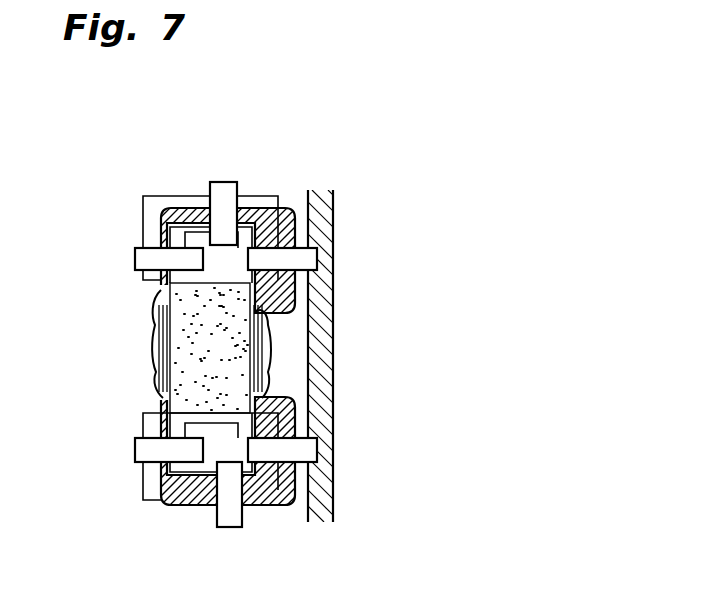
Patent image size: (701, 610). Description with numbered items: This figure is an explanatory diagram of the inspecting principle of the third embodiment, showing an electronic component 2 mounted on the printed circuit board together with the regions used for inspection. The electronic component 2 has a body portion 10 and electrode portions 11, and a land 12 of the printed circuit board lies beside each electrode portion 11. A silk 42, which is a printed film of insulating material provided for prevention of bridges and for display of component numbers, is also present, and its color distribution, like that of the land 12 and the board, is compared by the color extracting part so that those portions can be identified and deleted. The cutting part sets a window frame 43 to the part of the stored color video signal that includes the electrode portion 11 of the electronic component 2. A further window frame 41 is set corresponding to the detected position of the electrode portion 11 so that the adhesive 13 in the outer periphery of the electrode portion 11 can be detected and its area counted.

The electronic component 2 is at (176, 383).
The body portion 10 is at (193, 338).
The electrode portion 11 is at (215, 262).
The land 12 is at (263, 207).
The adhesive 13 is at (263, 352).
The window frame 41 is at (168, 196).
The silk 42 is at (337, 213).
The window frame 43 is at (224, 190).